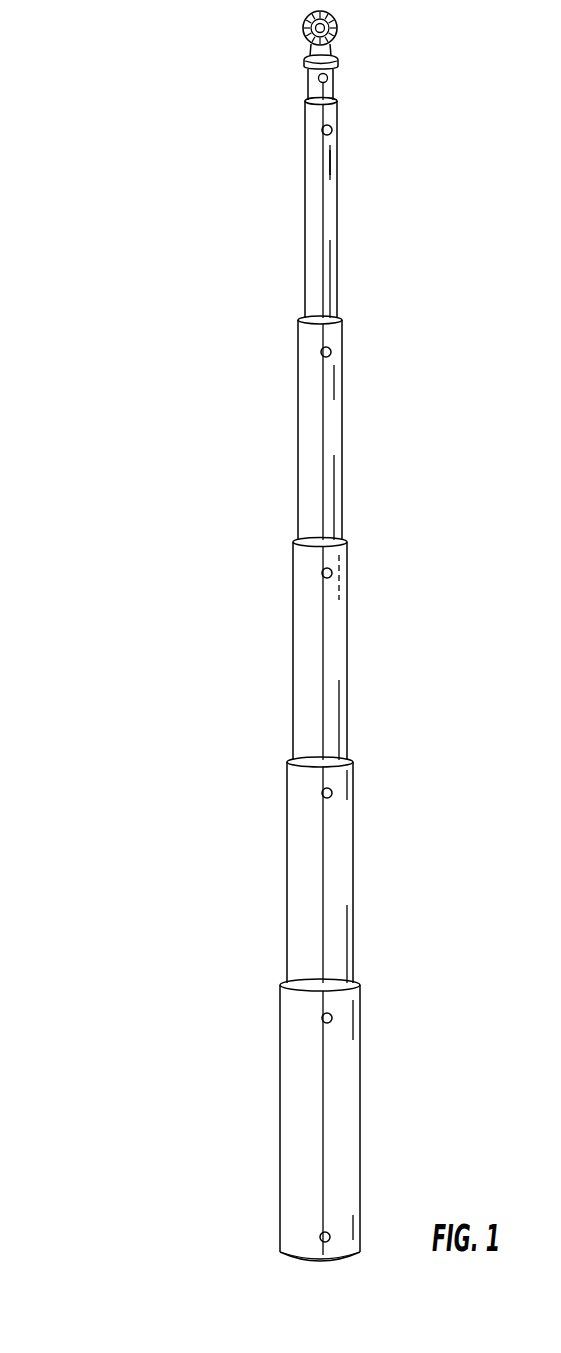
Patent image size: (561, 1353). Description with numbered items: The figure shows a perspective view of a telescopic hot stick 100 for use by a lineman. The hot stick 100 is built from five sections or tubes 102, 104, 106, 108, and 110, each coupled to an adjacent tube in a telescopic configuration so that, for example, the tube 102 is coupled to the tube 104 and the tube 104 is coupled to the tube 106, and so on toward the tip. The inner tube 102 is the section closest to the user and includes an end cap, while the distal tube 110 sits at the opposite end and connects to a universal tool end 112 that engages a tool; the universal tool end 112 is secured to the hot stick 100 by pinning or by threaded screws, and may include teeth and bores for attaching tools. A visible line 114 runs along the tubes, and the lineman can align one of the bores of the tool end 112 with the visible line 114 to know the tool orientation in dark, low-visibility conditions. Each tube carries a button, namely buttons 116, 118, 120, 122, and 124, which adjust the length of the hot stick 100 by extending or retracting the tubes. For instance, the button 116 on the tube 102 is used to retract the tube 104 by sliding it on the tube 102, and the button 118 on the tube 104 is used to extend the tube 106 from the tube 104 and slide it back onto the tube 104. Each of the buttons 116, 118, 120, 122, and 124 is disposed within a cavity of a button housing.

The telescopic hot stick 100 is at (123, 104).
The inner tube 102 is at (348, 1113).
The tube 104 is at (348, 890).
The tube 106 is at (345, 650).
The tube 108 is at (338, 478).
The distal tube 110 is at (337, 253).
The universal tool end 112 is at (338, 31).
The visible line 114 is at (329, 161).
The button 116 is at (333, 1018).
The button 118 is at (333, 793).
The button 120 is at (333, 573).
The button 122 is at (332, 352).
The button 124 is at (333, 131).